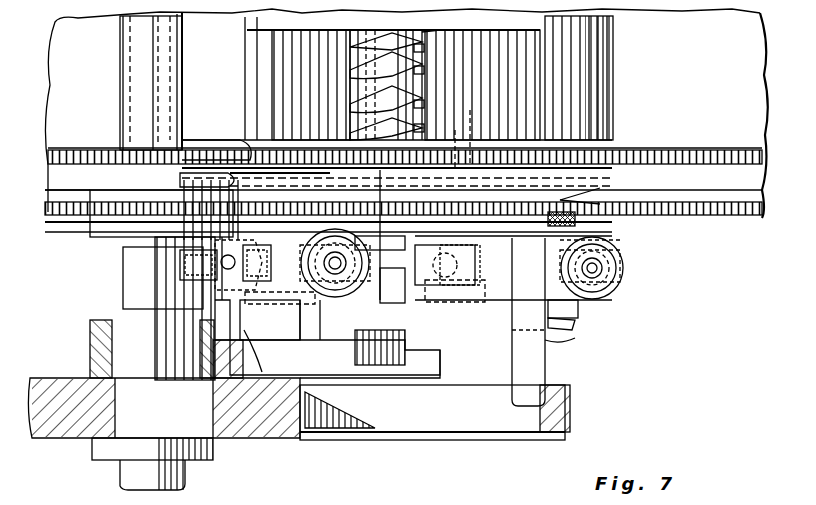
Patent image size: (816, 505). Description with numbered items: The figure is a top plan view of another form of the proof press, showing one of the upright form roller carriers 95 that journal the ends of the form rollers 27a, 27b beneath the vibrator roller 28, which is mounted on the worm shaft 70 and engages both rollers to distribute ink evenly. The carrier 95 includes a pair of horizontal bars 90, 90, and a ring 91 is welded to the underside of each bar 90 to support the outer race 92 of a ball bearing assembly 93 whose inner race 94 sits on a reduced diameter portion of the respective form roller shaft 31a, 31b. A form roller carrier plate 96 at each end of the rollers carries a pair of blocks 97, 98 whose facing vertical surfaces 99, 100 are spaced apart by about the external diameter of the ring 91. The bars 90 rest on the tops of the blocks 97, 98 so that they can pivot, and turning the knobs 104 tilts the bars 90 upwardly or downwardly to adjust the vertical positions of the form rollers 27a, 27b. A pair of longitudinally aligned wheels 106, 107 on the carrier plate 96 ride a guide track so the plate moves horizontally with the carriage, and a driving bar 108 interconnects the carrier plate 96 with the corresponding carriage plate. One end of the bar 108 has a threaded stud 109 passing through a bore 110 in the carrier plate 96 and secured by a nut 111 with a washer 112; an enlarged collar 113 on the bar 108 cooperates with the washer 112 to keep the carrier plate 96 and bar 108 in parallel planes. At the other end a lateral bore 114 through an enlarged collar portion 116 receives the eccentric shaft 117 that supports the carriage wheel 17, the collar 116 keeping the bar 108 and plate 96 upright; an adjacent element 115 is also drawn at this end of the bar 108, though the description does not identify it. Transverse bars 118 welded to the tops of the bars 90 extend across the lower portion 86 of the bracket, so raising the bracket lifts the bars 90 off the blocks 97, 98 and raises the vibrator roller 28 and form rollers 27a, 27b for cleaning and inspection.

The wheels 17 is at (95, 222).
The form roller 27a is at (155, 67).
The form roller 27b is at (600, 79).
The vibrator roller 28 is at (490, 30).
The form roller shaft 31a is at (257, 237).
The form roller shaft 31b is at (600, 192).
The worm shaft 70 is at (420, 68).
The lower portion of the bracket 86 is at (420, 415).
The horizontal bars 90 is at (380, 236).
The ring 91 is at (205, 266).
The outer race 92 is at (237, 289).
The ball bearing assembly 93 is at (212, 234).
The inner race 94 is at (190, 179).
The form roller carrier 95 is at (562, 340).
The form roller carrier plate 96 is at (560, 330).
The block 97 is at (578, 317).
The block 98 is at (261, 263).
The vertical surface 99 is at (455, 165).
The vertical surface 100 is at (290, 292).
The knob 104 is at (312, 245).
The wheel 106 is at (232, 140).
The wheel 107 is at (470, 150).
The driving bar 108 is at (380, 378).
The threaded stud 109 is at (323, 321).
The bore 110 is at (371, 343).
The nut 111 is at (297, 321).
The washer 112 is at (410, 296).
The enlarged collar 113 is at (372, 350).
The lateral bore 114 is at (115, 330).
The nut 115 is at (152, 464).
The enlarged collar portion 116 is at (92, 331).
The eccentric shaft 117 is at (136, 255).
The transverse bars 118 is at (522, 345).